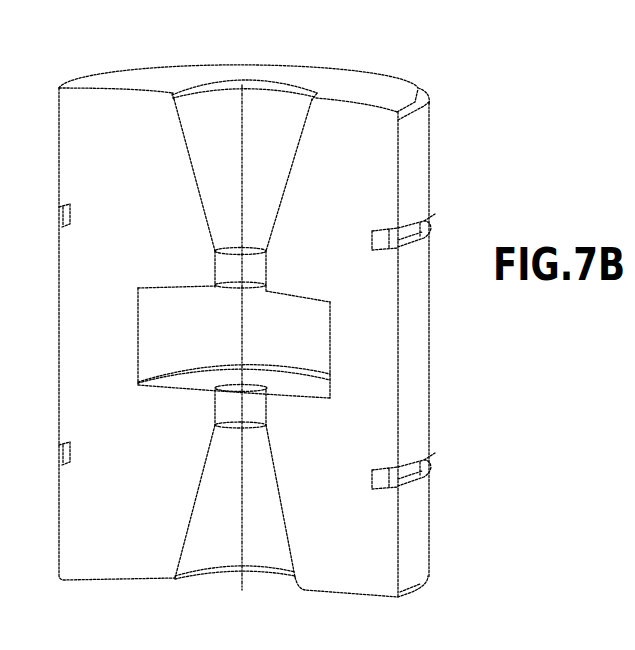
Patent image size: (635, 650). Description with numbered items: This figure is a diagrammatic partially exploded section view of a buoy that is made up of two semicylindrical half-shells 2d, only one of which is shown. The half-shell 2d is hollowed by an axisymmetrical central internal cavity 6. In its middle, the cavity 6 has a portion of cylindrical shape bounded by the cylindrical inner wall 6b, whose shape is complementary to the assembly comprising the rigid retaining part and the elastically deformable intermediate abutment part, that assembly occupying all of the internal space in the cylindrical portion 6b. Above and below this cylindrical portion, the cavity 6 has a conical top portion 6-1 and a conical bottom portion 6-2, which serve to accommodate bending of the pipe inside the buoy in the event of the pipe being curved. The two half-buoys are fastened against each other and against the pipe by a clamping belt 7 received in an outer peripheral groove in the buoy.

The semicylindrical half-shell 2d is at (90, 117).
The axisymmetrical central internal cavity 6 is at (266, 121).
The conical top portion of the cavity 6-1 is at (290, 148).
The conical bottom portion of the cavity 6-2 is at (289, 544).
The cylindrical inner wall of the central cavity 6b is at (140, 323).
The clamping belt 7 is at (384, 241).